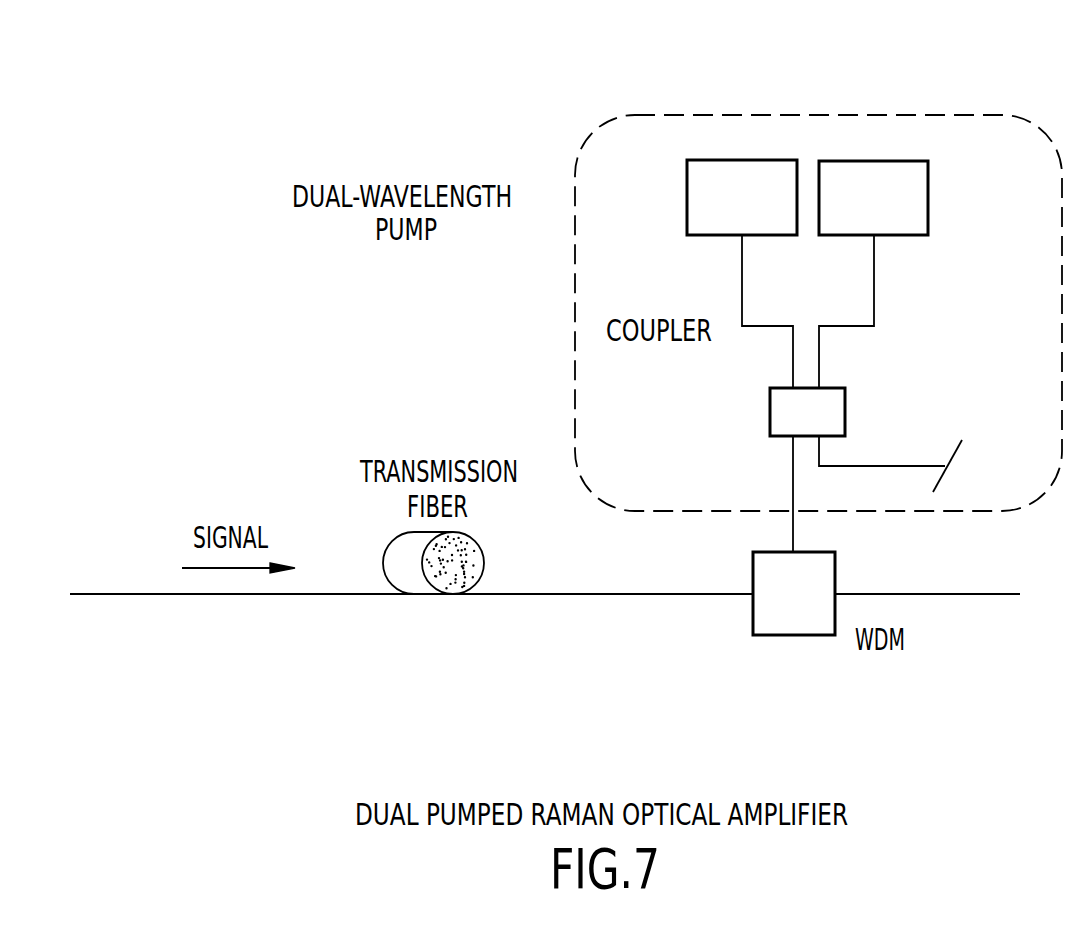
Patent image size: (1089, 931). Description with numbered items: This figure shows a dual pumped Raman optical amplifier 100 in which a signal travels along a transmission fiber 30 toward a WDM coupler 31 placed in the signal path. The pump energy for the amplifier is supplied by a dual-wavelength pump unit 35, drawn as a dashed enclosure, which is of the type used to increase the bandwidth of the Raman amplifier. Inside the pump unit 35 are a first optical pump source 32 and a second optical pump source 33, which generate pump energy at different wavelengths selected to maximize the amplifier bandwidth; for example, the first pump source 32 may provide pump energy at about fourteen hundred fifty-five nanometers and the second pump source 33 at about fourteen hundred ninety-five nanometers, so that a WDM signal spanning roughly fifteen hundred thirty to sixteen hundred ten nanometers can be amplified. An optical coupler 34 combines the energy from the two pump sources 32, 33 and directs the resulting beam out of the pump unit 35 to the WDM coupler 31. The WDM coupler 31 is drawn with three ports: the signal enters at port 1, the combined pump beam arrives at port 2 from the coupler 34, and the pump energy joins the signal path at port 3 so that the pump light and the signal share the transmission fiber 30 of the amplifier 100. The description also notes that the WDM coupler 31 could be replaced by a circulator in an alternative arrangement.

The dual pumped Raman optical amplifier 100 is at (136, 110).
The transmission fiber 30 is at (432, 594).
The WDM coupler 31 is at (787, 635).
The first optical pump source 32 is at (687, 185).
The second optical pump source 33 is at (928, 200).
The optical coupler 34 is at (770, 420).
The pump unit 35 is at (700, 117).
The WDM port 1 is at (741, 576).
The WDM port 2 is at (804, 494).
The WDM port 3 is at (849, 576).